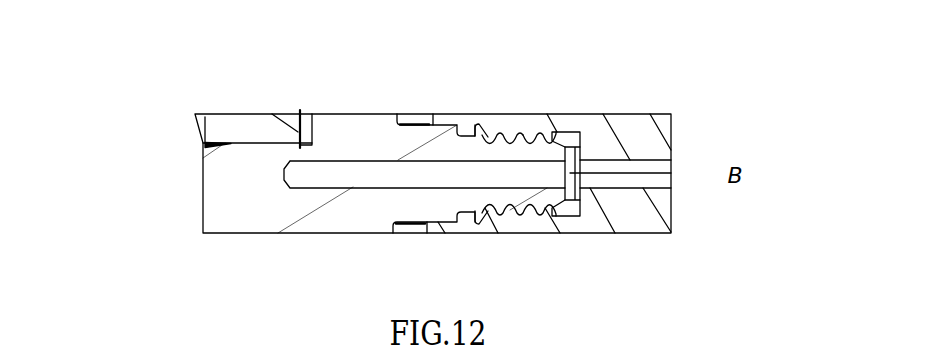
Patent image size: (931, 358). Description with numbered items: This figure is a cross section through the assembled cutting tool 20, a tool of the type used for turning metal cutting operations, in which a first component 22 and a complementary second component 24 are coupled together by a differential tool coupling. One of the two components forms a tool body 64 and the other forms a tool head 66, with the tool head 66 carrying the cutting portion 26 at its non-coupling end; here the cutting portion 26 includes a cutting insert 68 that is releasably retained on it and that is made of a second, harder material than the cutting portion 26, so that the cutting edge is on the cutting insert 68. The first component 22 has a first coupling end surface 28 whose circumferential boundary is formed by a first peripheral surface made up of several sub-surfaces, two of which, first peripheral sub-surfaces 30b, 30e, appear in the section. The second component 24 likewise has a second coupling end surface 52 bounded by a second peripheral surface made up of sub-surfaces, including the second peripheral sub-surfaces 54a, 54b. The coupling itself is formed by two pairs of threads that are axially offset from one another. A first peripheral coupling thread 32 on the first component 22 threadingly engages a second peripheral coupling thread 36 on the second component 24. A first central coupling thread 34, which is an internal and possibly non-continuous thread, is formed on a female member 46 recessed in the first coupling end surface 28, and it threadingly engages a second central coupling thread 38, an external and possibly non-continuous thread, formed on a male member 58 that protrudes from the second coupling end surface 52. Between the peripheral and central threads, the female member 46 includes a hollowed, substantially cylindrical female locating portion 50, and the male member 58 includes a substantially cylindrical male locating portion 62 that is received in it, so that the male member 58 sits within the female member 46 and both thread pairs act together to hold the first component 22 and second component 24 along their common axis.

The cutting tool 20 is at (668, 37).
The first component 22 is at (586, 65).
The second component 24 is at (267, 72).
The cutting portion 26 is at (194, 75).
The first coupling end surface 28 is at (385, 118).
The first peripheral sub-surface 30b is at (645, 114).
The first peripheral sub-surface 30e is at (637, 233).
The first peripheral coupling thread 32 is at (372, 118).
The first central coupling thread 34 is at (525, 134).
The second peripheral coupling thread 36 is at (397, 235).
The second central coupling thread 38 is at (507, 134).
The female member 46 is at (545, 255).
The female locating portion 50 is at (450, 118).
The second coupling end surface 52 is at (418, 232).
The second peripheral sub-surface 54a is at (320, 233).
The second peripheral sub-surface 54b is at (323, 114).
The male member 58 is at (505, 247).
The male locating portion 62 is at (433, 118).
The tool body 64 is at (707, 118).
The tool head 66 is at (187, 103).
The cutting insert 68 is at (230, 127).